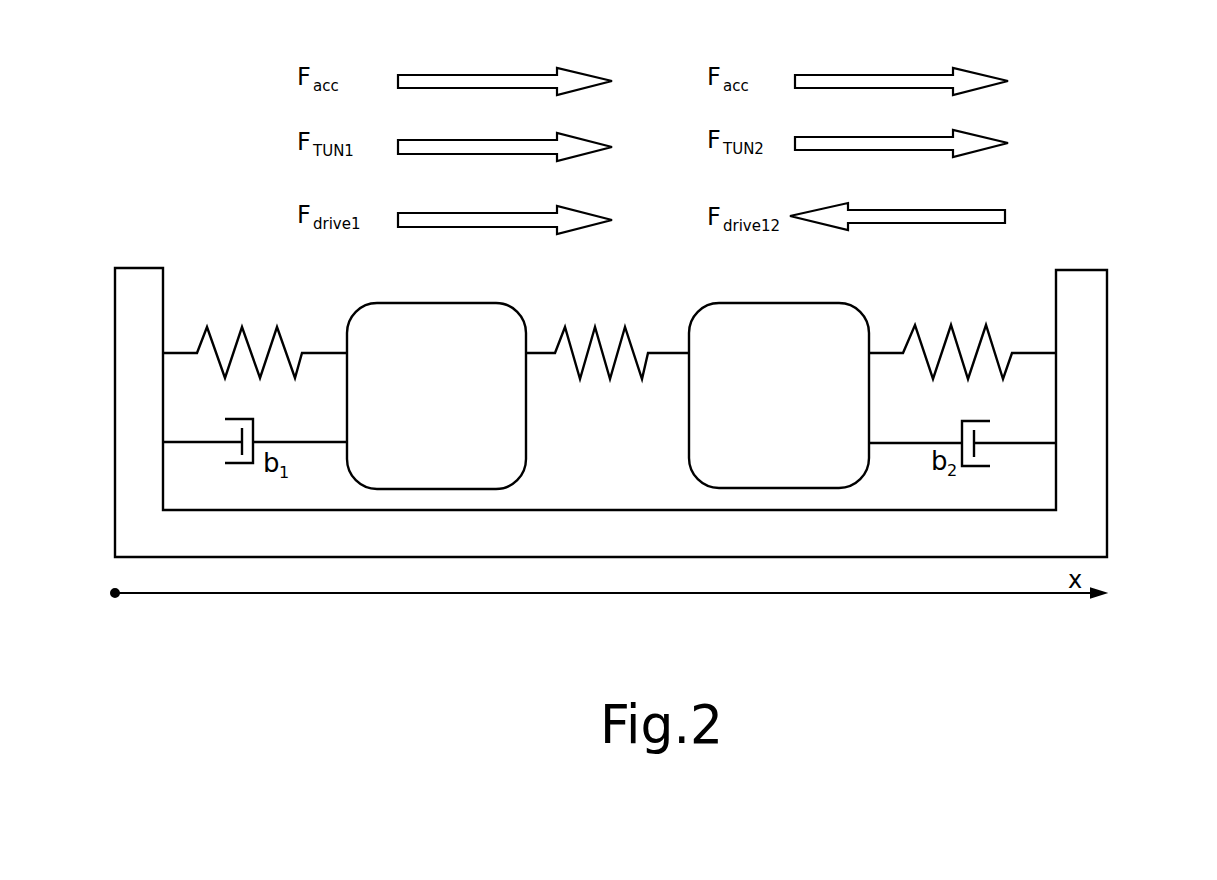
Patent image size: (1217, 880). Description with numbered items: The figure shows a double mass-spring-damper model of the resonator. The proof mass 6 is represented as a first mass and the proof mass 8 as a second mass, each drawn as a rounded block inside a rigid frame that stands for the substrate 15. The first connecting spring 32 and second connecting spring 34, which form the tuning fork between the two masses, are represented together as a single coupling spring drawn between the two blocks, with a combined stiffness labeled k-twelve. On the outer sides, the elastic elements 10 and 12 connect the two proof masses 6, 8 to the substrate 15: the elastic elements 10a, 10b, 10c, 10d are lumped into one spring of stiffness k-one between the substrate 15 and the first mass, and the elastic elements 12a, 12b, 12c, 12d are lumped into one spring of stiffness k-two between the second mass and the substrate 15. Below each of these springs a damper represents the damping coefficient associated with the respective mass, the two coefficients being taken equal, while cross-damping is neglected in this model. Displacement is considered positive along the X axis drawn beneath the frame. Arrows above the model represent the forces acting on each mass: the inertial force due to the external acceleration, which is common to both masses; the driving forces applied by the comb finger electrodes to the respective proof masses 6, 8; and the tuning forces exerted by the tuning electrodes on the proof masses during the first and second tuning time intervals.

The proof mass 6 is at (397, 340).
The proof mass 8 is at (740, 340).
The elastic elements 10 is at (239, 290).
The elastic element 10a is at (239, 290).
The elastic element 10b is at (239, 290).
The elastic element 10c is at (239, 290).
The elastic element 10d is at (183, 352).
The elastic elements 12 is at (1030, 280).
The elastic element 12a is at (1030, 280).
The elastic element 12b is at (1030, 280).
The elastic element 12c is at (1030, 280).
The elastic element 12d is at (1023, 352).
The substrate 15 is at (1090, 403).
The first connecting spring 32 is at (607, 377).
The second connecting spring 34 is at (580, 381).